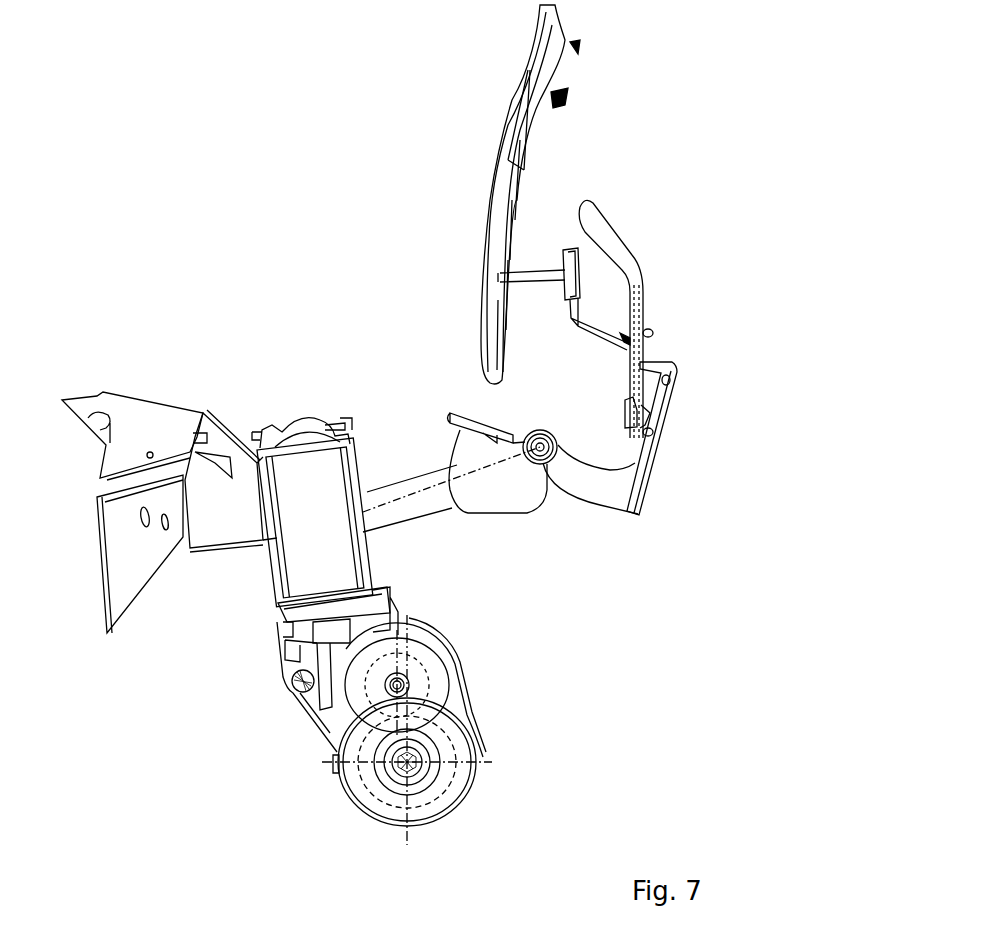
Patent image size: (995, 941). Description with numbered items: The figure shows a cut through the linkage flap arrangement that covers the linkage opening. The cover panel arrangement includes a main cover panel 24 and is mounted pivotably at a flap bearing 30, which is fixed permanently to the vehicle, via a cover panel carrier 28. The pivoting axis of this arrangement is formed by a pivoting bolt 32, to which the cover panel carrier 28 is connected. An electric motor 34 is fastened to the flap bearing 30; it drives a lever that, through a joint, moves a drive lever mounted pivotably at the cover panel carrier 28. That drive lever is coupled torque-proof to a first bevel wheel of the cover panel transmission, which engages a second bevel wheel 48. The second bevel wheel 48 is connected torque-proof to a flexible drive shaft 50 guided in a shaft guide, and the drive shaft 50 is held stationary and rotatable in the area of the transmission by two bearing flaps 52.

The main cover panel 24 is at (496, 185).
The cover panel carrier 28 is at (603, 490).
The flap bearing 30 is at (132, 413).
The pivoting bolt 32 is at (545, 462).
The electric motor 34 is at (457, 782).
The second bevel wheel 48 is at (624, 408).
The flexible drive shaft 50 is at (636, 350).
The bearing flaps 52 is at (652, 332).